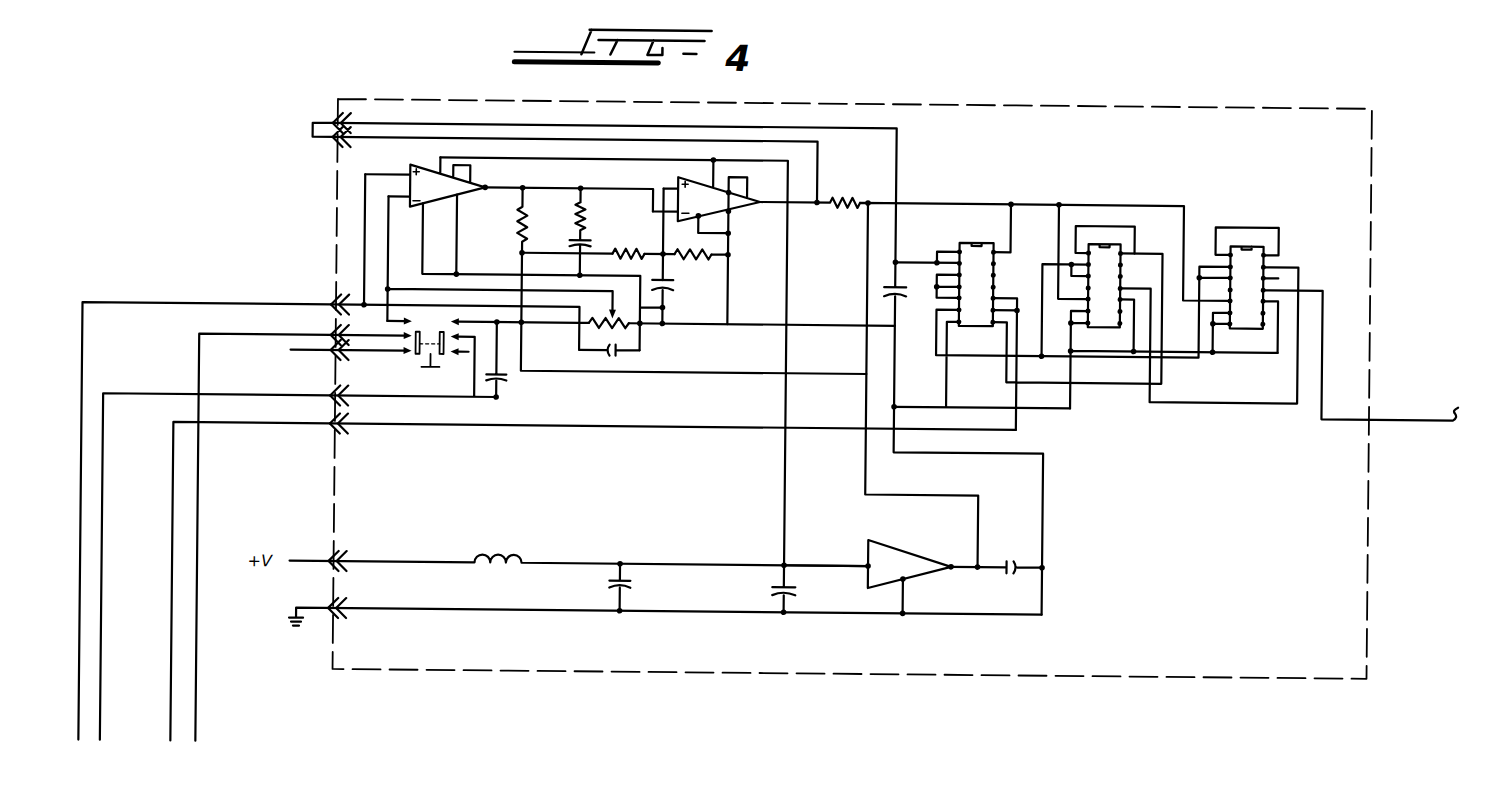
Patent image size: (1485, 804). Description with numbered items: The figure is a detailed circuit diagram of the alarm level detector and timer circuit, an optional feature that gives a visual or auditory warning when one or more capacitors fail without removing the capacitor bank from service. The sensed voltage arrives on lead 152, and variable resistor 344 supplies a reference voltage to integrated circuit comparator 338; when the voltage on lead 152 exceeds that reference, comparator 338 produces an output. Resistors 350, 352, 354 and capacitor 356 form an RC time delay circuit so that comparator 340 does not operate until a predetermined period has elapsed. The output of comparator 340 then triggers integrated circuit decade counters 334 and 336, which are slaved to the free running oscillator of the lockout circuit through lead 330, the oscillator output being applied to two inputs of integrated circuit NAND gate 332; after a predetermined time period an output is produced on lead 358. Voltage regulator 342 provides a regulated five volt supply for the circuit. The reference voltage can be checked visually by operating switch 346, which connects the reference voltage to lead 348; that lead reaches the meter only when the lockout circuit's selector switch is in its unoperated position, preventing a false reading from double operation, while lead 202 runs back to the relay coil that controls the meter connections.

The lead 152 is at (81, 498).
The lead 202 is at (108, 650).
The lead 330 is at (178, 506).
The lead 348 is at (200, 548).
The integrated circuit NAND gate 332 is at (990, 274).
The integrated circuit decade counter 334 is at (1119, 275).
The integrated circuit decade counter 336 is at (1261, 276).
The integrated circuit comparator 338 is at (425, 182).
The integrated circuit comparator 340 is at (707, 190).
The voltage regulator 342 is at (901, 570).
The variable resistor 344 is at (626, 332).
The switch 346 is at (409, 356).
The resistor 350 is at (517, 222).
The resistor 352 is at (612, 250).
The resistor 354 is at (688, 254).
The capacitor 356 is at (661, 281).
The lead 358 is at (1324, 343).